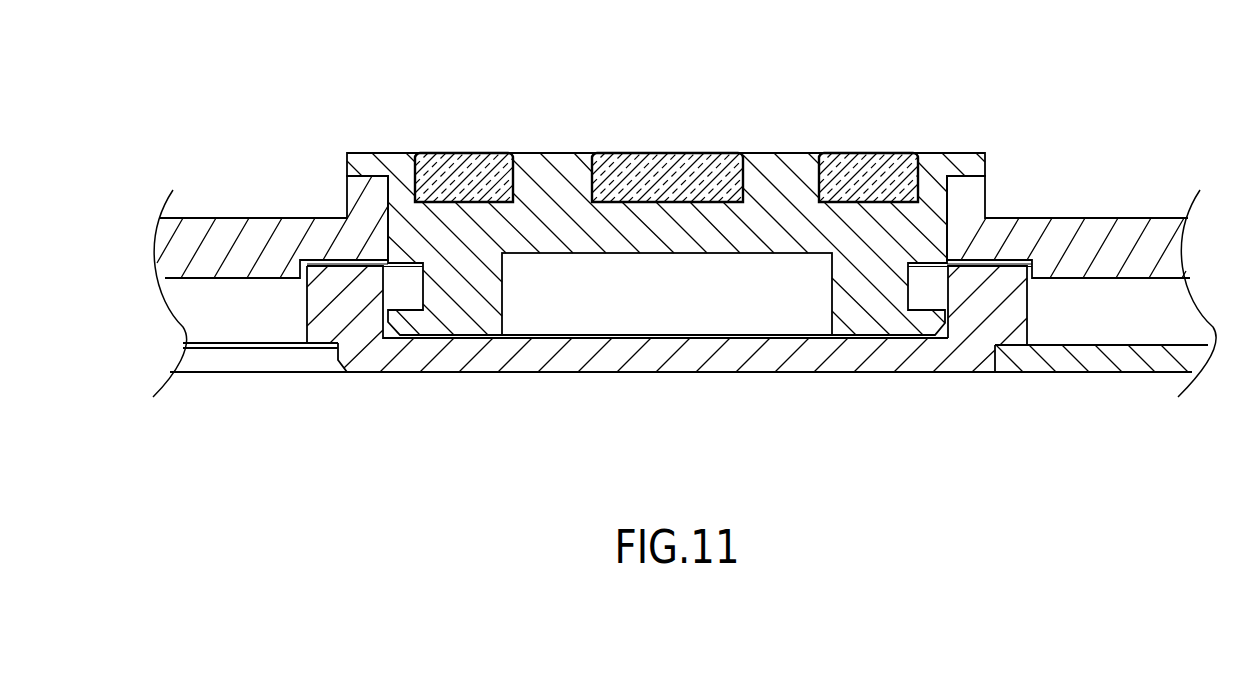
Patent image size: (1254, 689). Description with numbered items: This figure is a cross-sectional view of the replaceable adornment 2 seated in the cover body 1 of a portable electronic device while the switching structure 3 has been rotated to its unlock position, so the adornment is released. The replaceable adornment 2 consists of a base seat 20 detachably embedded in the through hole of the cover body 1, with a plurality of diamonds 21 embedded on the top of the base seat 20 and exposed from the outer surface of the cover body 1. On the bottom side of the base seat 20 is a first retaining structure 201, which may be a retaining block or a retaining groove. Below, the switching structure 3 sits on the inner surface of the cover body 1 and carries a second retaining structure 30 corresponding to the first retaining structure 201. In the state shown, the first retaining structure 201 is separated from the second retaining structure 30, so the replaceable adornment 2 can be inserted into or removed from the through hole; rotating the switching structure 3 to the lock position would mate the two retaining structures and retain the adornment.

The cover body 1 is at (1103, 220).
The replaceable adornment 2 is at (669, 183).
The base seat 20 is at (669, 208).
The diamonds 21 is at (788, 83).
The first retaining structure 201 is at (895, 273).
The switching structure 3 is at (689, 373).
The second retaining structure 30 is at (962, 287).